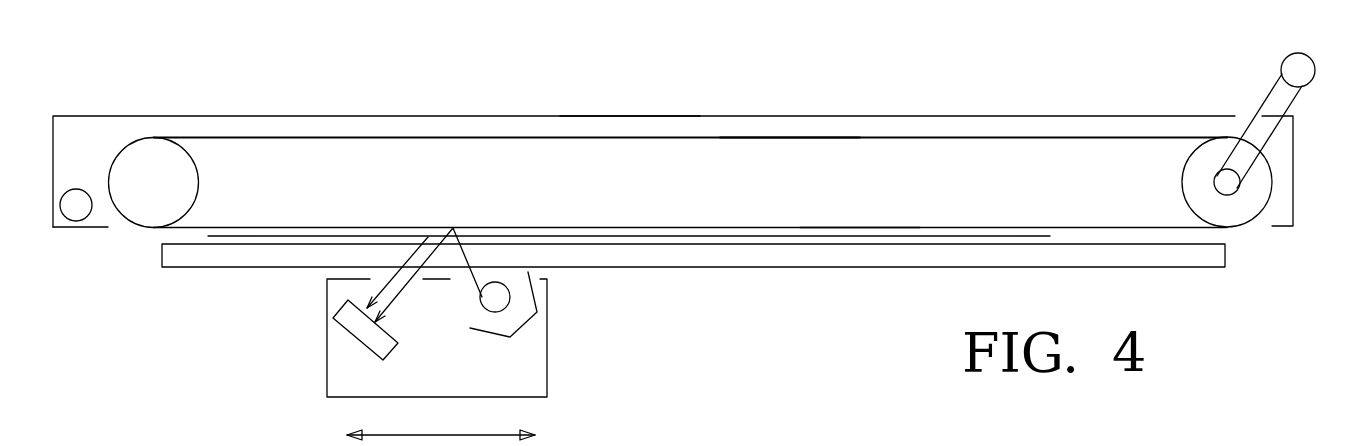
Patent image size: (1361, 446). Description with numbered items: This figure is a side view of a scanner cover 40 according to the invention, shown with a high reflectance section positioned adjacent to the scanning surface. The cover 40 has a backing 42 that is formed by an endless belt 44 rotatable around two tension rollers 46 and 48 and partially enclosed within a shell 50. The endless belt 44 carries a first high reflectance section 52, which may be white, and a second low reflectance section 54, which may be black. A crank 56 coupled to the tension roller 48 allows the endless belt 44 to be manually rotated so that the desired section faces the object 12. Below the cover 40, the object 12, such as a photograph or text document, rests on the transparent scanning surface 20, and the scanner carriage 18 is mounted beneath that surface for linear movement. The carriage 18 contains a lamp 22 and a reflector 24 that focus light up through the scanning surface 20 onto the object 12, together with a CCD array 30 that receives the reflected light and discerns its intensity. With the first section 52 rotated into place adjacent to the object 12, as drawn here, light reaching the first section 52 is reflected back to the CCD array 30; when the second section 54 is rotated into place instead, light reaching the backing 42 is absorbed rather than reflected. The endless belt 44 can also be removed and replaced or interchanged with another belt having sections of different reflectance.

The object 12 is at (747, 237).
The scanner carriage 18 is at (328, 369).
The scanning surface 20 is at (865, 257).
The lamp 22 is at (483, 306).
The reflector 24 is at (523, 329).
The CCD array 30 is at (393, 347).
The cover 40 is at (106, 82).
The backing 42 is at (130, 237).
The endless belt 44 is at (1157, 135).
The tension roller 46 is at (193, 185).
The tension roller 48 is at (1188, 185).
The shell 50 is at (620, 115).
The first high reflectance section 52 is at (860, 228).
The second low reflectance section 54 is at (792, 138).
The crank 56 is at (1292, 97).